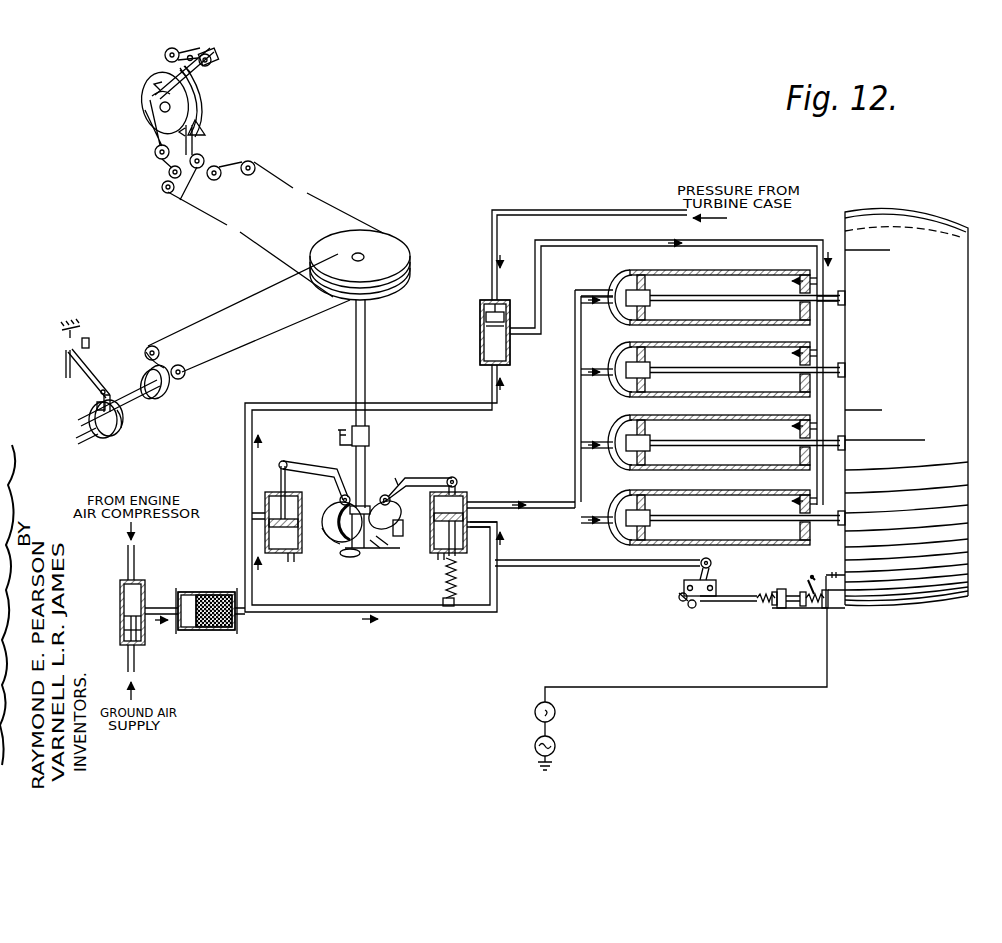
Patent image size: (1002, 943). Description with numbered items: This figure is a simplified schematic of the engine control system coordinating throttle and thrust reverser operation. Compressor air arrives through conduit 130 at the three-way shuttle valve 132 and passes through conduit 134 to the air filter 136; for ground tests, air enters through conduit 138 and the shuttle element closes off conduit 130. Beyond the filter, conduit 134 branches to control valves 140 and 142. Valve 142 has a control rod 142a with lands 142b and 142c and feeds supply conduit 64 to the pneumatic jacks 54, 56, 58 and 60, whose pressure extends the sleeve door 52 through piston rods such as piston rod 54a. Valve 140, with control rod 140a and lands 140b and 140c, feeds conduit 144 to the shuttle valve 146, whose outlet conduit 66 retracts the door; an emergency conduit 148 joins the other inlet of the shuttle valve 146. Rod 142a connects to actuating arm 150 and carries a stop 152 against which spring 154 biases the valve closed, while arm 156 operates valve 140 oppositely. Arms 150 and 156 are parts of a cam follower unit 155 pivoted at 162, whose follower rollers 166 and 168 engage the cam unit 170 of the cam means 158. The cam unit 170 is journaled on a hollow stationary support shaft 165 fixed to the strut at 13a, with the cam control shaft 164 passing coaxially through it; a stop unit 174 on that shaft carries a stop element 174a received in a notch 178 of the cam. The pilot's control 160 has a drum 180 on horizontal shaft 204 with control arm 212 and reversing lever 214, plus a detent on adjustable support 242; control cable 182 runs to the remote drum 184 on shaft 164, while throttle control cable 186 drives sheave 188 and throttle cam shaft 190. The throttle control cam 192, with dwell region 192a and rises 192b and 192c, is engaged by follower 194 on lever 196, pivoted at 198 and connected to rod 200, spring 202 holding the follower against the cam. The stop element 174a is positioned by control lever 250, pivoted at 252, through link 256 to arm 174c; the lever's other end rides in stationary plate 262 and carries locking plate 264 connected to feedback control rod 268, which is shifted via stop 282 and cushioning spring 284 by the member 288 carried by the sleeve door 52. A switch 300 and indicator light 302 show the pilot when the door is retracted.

The strut fixing point 13a is at (340, 432).
The sleeve door 52 is at (906, 212).
The pneumatic jack 54 is at (652, 270).
The piston rod 54a is at (830, 298).
The pneumatic jack 56 is at (640, 343).
The pneumatic jack 58 is at (640, 416).
The pneumatic jack 60 is at (640, 491).
The supply conduit 64 is at (574, 412).
The conduit 66 is at (820, 244).
The conduit 130 is at (134, 566).
The three-way shuttle valve 132 is at (120, 602).
The conduit 134 is at (155, 602).
The air filter 136 is at (206, 590).
The conduit 138 is at (135, 662).
The control valve 140 is at (272, 490).
The control rod 140a is at (286, 472).
The land 140b is at (262, 516).
The land 140c is at (289, 554).
The control valve 142 is at (467, 493).
The control rod 142a is at (474, 502).
The land 142b is at (475, 522).
The land 142c is at (437, 552).
The conduit 144 is at (467, 400).
The three-way shuttle valve 146 is at (510, 344).
The emergency fluid pressure source conduit 148 is at (491, 281).
The actuating arm 150 is at (438, 478).
The stop 152 is at (443, 600).
The spring 154 is at (456, 588).
The cam follower unit 155 is at (404, 478).
The arm 156 is at (322, 470).
The cam means 158 is at (351, 528).
The pilot's control 160 is at (137, 143).
The pivot 162 is at (387, 477).
The cam control shaft 164 is at (366, 328).
The hollow stationary support shaft 165 is at (370, 436).
The follower roller 166 is at (340, 499).
The follower roller 168 is at (391, 500).
The cam unit 170 is at (330, 545).
The stop unit 174 is at (376, 553).
The stop element 174a is at (404, 543).
The arm 174c is at (368, 556).
The notch 178 is at (348, 554).
The drum 180 is at (199, 106).
The control cable 182 is at (246, 161).
The remote drum 184 is at (380, 236).
The throttle control cable 186 is at (234, 306).
The controlled sheave 188 is at (164, 364).
The throttle cam shaft 190 is at (131, 398).
The throttle control cam 192 is at (104, 431).
The dwell region 192a is at (90, 412).
The rise 192b is at (95, 402).
The rise 192c is at (120, 424).
The cam follower 194 is at (111, 394).
The lever 196 is at (96, 360).
The pivot 198 is at (84, 338).
The rod 200 is at (64, 369).
The spring 202 is at (60, 336).
The horizontal shaft 204 is at (157, 107).
The control arm 212 is at (198, 66).
The reversing lever 214 is at (192, 49).
The adjustable support 242 is at (155, 153).
The control lever 250 is at (699, 566).
The pivot 252 is at (708, 576).
The link 256 is at (597, 552).
The stationary plate 262 is at (717, 588).
The locking plate 264 is at (681, 604).
The feedback control rod 268 is at (736, 602).
The stop 282 is at (807, 588).
The cushioning spring 284 is at (764, 597).
The member 288 is at (781, 589).
The switch 300 is at (834, 607).
The indicator light 302 is at (557, 714).